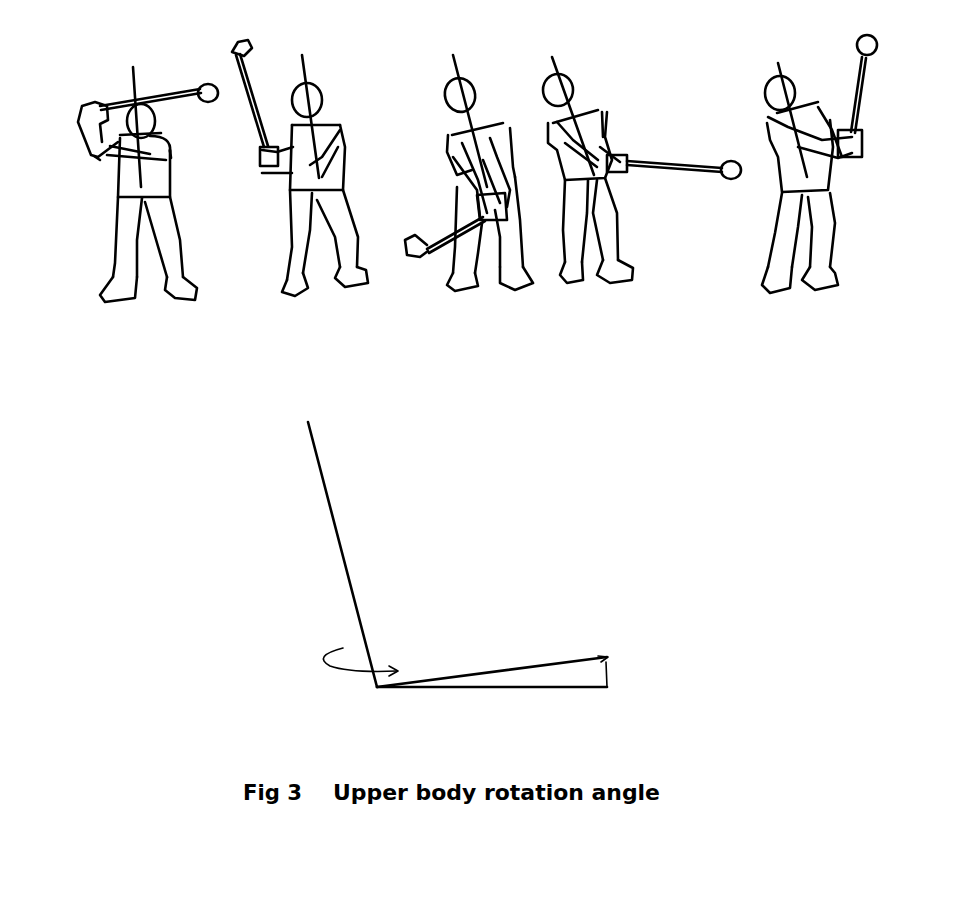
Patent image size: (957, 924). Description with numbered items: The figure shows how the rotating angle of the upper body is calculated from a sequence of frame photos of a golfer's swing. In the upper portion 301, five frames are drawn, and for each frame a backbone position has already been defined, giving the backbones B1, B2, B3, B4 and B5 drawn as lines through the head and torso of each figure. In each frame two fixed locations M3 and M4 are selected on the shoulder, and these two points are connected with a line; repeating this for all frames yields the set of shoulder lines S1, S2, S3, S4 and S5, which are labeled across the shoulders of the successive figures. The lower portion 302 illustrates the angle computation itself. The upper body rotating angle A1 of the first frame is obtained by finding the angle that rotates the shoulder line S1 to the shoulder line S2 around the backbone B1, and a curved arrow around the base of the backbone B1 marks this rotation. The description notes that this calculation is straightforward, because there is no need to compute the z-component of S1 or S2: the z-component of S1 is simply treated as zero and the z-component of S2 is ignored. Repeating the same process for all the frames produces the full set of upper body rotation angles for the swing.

The frame photo series portion 301 is at (113, 50).
The rotation angle calculation diagram 302 is at (280, 385).
The backbone B1 is at (135, 76).
The backbone B2 is at (308, 73).
The backbone B3 is at (460, 73).
The backbone B4 is at (558, 73).
The backbone B5 is at (785, 75).
The shoulder line S1 is at (162, 133).
The shoulder line S2 is at (340, 123).
The shoulder line S3 is at (497, 113).
The shoulder line S4 is at (597, 108).
The shoulder line S5 is at (825, 95).
The fixed shoulder location M3 is at (100, 160).
The fixed shoulder location M4 is at (170, 152).
The upper body rotating angle A1 is at (332, 672).